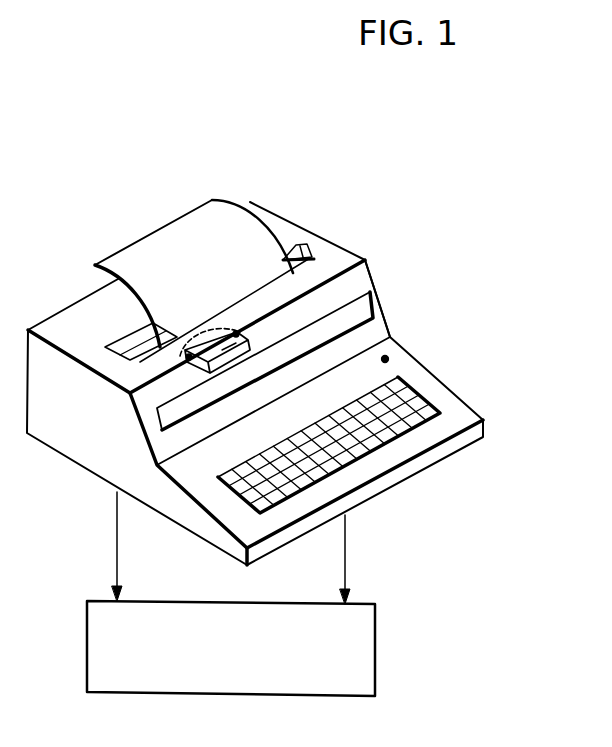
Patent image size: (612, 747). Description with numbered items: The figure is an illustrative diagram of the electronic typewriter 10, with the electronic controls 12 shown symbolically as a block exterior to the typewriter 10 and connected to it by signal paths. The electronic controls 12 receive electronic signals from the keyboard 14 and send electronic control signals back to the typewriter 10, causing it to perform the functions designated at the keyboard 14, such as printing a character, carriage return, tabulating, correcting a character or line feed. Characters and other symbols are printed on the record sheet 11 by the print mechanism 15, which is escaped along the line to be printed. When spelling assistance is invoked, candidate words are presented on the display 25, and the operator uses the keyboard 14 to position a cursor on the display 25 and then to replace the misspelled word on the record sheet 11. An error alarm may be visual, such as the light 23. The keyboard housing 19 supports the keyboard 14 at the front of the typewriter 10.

The electronic typewriter 10 is at (381, 323).
The record sheet 11 is at (226, 213).
The electronic controls 12 is at (375, 645).
The keyboard 14 is at (410, 395).
The print mechanism 15 is at (205, 335).
The keyboard housing 19 is at (262, 507).
The light 23 is at (388, 358).
The display 25 is at (372, 278).